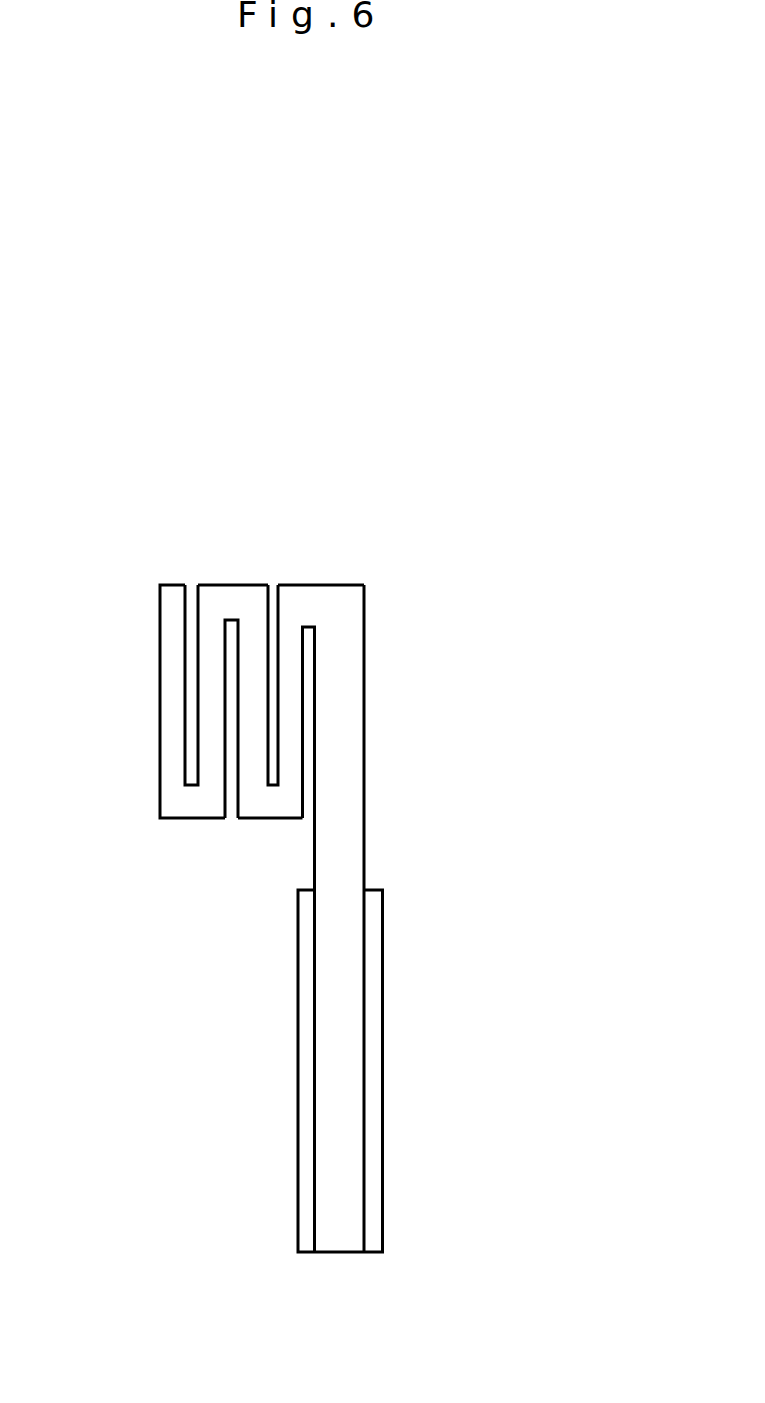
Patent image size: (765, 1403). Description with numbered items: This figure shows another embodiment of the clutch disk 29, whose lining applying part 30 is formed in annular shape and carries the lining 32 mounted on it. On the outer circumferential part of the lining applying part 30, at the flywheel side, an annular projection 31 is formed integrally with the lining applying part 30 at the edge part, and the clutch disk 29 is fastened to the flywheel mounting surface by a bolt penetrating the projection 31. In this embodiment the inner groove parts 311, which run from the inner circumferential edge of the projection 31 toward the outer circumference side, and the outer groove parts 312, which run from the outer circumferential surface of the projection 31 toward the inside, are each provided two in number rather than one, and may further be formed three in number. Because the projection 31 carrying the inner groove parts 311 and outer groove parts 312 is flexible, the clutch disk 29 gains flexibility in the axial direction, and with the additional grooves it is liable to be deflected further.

The clutch disk 29 is at (388, 431).
The lining applying part 30 is at (342, 773).
The projection 31 is at (220, 493).
The inner groove part 311 is at (233, 818).
The outer groove part 312 is at (192, 600).
The lining 32 is at (308, 1143).